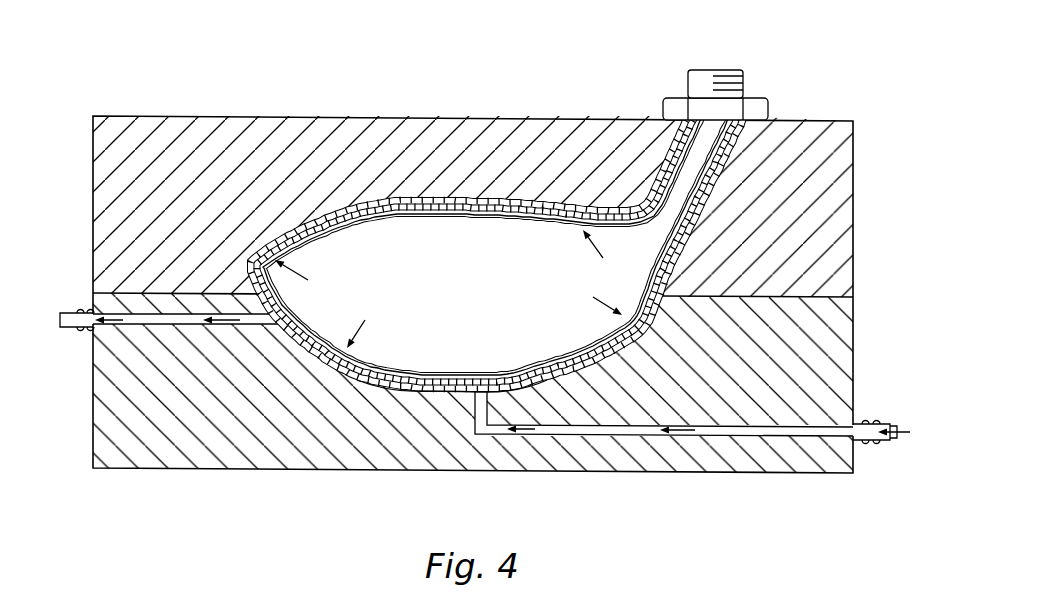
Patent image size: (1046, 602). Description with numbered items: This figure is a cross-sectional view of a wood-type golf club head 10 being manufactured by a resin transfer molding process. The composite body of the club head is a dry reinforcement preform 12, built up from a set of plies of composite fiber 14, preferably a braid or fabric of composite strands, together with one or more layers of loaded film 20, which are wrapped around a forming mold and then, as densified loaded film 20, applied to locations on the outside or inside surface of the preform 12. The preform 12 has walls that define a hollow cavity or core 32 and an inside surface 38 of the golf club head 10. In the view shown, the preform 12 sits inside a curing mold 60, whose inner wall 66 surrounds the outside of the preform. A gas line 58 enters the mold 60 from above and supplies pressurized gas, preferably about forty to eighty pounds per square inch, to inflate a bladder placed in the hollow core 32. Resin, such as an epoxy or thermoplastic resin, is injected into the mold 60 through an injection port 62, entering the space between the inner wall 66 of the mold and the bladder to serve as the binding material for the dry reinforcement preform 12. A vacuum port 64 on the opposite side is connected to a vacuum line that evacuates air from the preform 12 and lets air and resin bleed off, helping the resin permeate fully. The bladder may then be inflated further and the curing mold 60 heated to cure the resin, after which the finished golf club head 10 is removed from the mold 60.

The golf club head 10 is at (375, 53).
The dry reinforcement preform 12 is at (530, 377).
The plies of composite fiber 14 is at (520, 198).
The loaded film 20 is at (320, 330).
The hollow cavity or core 32 is at (473, 290).
The inside surface 38 is at (413, 392).
The gas line 58 is at (718, 70).
The curing mold 60 is at (843, 263).
The injection port 62 is at (886, 441).
The vacuum port 64 is at (70, 330).
The inner wall of the mold 66 is at (406, 197).